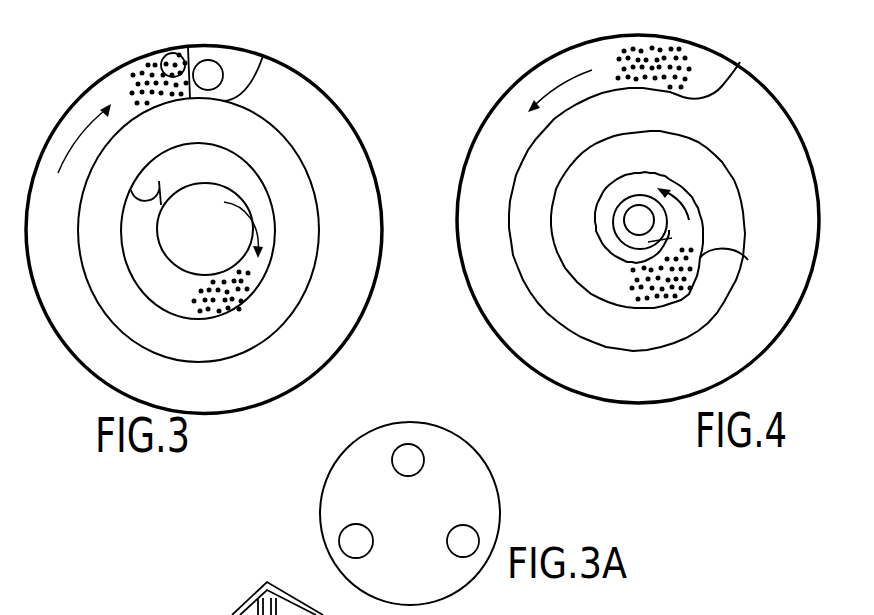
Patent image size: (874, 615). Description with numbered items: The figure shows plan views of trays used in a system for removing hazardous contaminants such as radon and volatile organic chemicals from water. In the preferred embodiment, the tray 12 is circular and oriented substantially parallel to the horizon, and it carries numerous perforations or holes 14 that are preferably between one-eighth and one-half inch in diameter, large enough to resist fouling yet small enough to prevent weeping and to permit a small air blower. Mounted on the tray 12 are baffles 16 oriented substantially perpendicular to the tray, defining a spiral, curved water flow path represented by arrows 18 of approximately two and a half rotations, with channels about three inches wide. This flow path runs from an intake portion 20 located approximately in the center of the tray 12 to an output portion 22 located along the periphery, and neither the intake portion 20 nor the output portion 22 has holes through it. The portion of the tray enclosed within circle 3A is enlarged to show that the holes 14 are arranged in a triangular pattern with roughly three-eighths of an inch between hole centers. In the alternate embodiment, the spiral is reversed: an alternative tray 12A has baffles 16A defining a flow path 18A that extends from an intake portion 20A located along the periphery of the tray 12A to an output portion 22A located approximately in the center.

In FIG. 3, the tray 12 is at (246, 393).
In FIG. 3A, the tray 12 is at (366, 504).
In FIG. 3, the holes 14 is at (198, 282).
In FIG. 3A, the holes 14 is at (447, 545).
In FIG. 3, the baffles 16 is at (154, 182).
In FIG. 3, the arrows 18 is at (244, 213).
In FIG. 3, the intake portion 20 is at (212, 247).
In FIG. 3, the output portion 22 is at (248, 80).
In FIG. 3, the circle 3A is at (160, 53).
In FIG. 4, the alternative tray 12A is at (754, 116).
In FIG. 4, the baffles 16A is at (748, 260).
In FIG. 4, the flow path 18A is at (686, 202).
In FIG. 4, the intake portion 20A is at (727, 87).
In FIG. 4, the output portion 22A is at (624, 233).